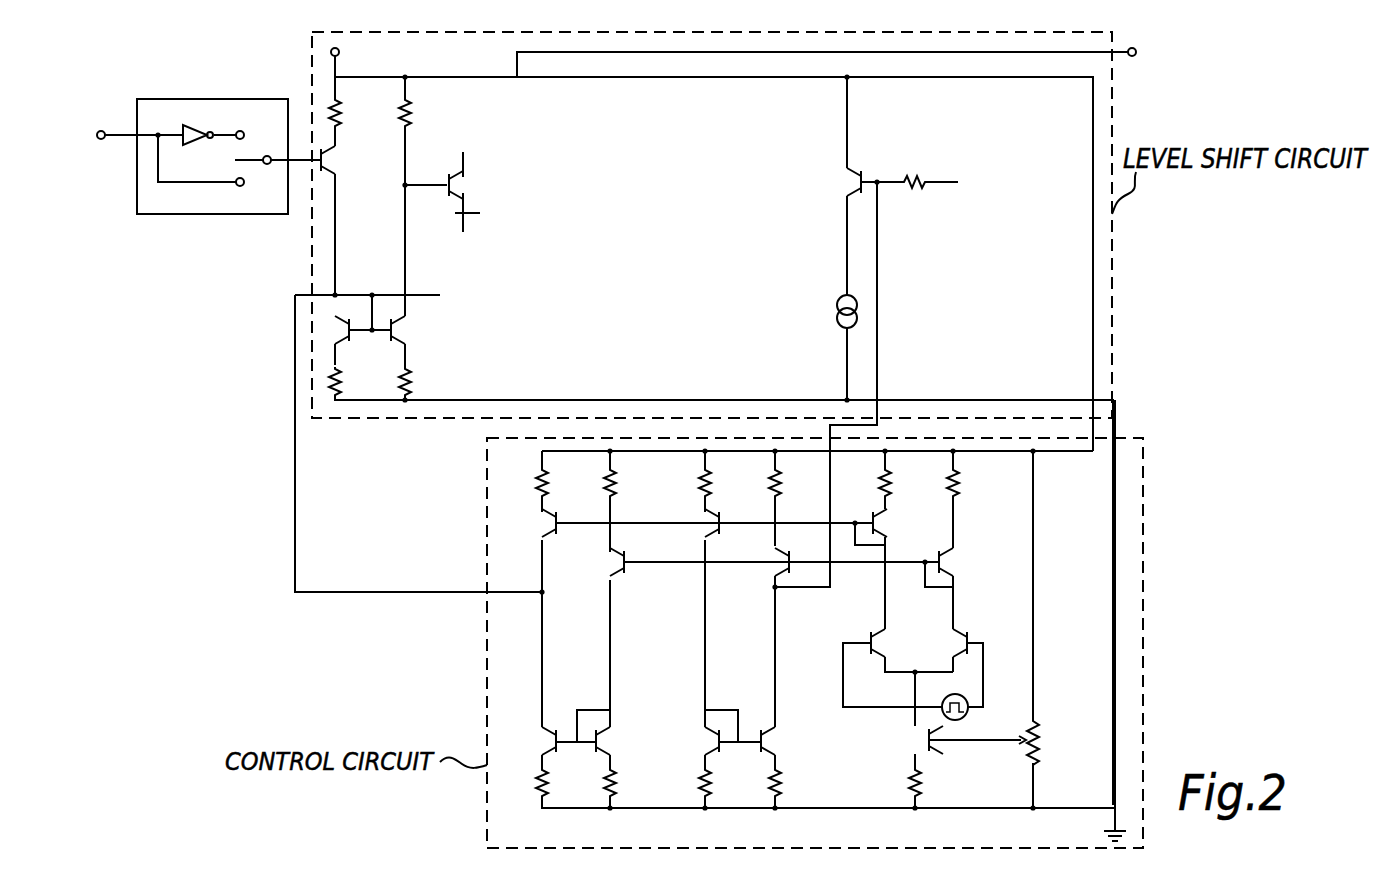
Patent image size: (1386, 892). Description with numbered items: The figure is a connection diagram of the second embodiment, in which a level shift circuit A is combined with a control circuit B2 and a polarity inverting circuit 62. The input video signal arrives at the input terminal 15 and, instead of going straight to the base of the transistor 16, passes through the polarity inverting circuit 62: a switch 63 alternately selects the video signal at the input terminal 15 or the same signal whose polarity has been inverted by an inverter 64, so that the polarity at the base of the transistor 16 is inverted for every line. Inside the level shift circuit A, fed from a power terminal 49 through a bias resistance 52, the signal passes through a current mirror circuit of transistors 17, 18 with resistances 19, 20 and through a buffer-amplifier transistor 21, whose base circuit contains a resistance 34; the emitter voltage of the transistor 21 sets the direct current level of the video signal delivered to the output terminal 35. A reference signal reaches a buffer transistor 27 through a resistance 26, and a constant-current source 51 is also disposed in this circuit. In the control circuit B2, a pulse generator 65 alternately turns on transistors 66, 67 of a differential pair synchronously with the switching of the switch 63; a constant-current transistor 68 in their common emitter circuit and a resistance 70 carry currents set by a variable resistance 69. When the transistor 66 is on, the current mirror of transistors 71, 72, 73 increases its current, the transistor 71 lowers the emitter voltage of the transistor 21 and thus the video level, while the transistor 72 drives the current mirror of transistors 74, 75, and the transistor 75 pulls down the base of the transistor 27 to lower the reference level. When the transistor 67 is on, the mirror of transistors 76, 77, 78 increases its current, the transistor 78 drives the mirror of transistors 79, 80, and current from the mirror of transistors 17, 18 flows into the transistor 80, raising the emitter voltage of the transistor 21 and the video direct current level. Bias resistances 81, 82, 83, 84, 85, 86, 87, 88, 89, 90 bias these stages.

The level shift circuit A is at (785, 34).
The control circuit B2 is at (1143, 438).
The input terminal 15 is at (102, 150).
The polarity inverting circuit 62 is at (212, 140).
The switch 63 is at (257, 155).
The inverter 64 is at (206, 123).
The power terminal 49 is at (353, 52).
The output terminal 35 is at (1130, 37).
The bias resistance 52 is at (352, 110).
The resistance 34 is at (422, 110).
The transistor 16 is at (345, 161).
The transistor 21 is at (472, 185).
The transistor 17 is at (329, 328).
The transistor 18 is at (411, 328).
The resistance 19 is at (351, 382).
The resistance 20 is at (421, 382).
The transistor 27 is at (833, 184).
The resistance 26 is at (913, 167).
The constant-current source 51 is at (825, 308).
The bias resistance 81 is at (523, 482).
The bias resistance 82 is at (588, 482).
The bias resistance 83 is at (685, 482).
The bias resistance 84 is at (755, 482).
The bias resistance 85 is at (865, 482).
The bias resistance 86 is at (931, 482).
The transistor 71 is at (530, 522).
The transistor 72 is at (693, 533).
The transistor 73 is at (897, 522).
The transistor 76 is at (964, 562).
The transistor 77 is at (762, 554).
The transistor 78 is at (598, 565).
The transistor 66 is at (895, 645).
The transistor 67 is at (971, 630).
The pulse generator 65 is at (971, 714).
The transistor 68 is at (908, 738).
The variable resistance 69 is at (1049, 742).
The resistance 70 is at (897, 780).
The transistor 80 is at (529, 742).
The transistor 79 is at (620, 742).
The transistor 74 is at (693, 742).
The transistor 75 is at (786, 742).
The bias resistance 90 is at (523, 783).
The bias resistance 89 is at (627, 783).
The bias resistance 88 is at (687, 783).
The bias resistance 87 is at (792, 783).